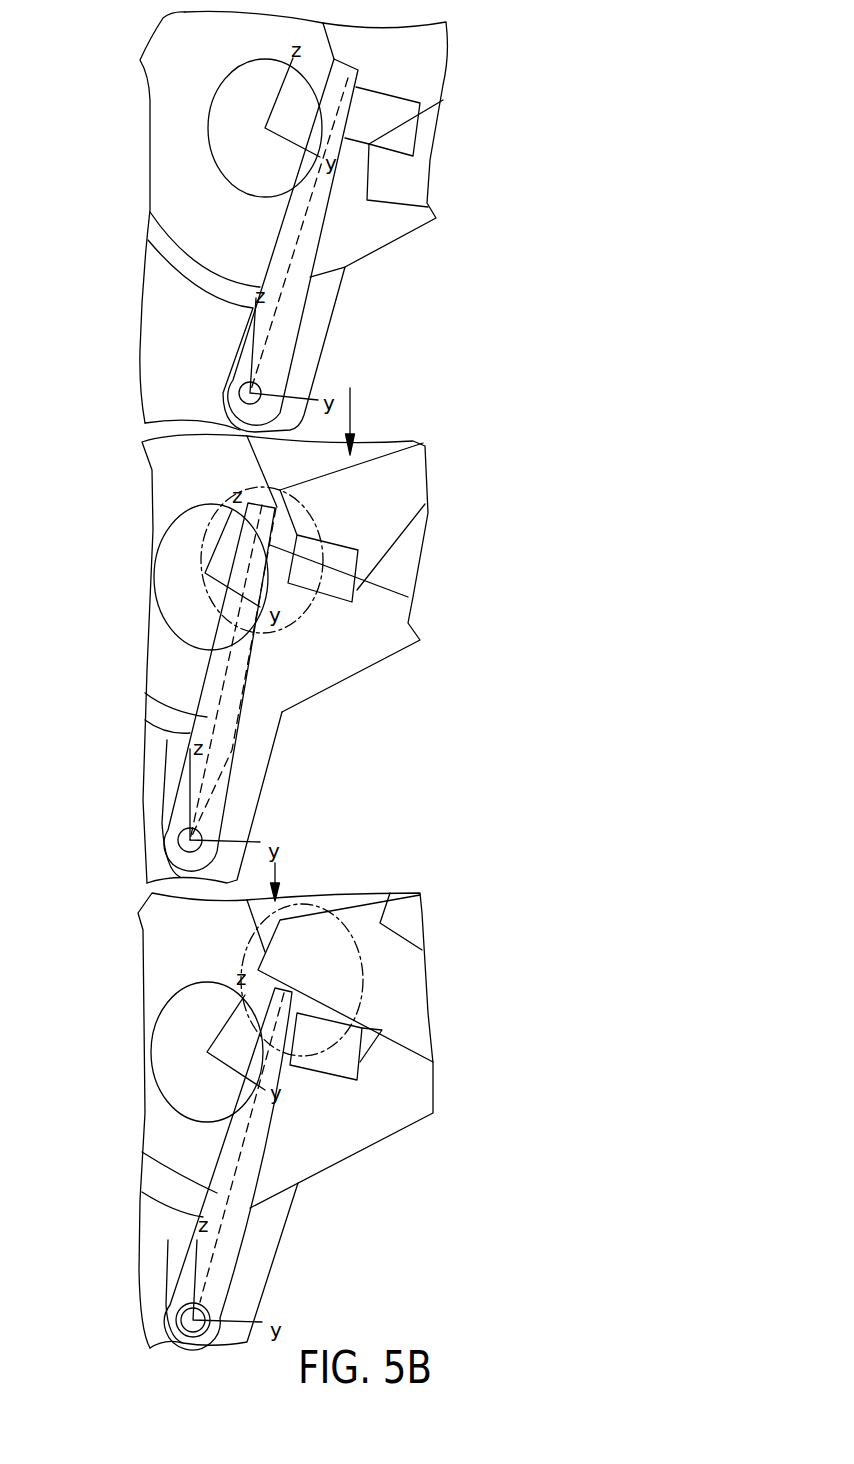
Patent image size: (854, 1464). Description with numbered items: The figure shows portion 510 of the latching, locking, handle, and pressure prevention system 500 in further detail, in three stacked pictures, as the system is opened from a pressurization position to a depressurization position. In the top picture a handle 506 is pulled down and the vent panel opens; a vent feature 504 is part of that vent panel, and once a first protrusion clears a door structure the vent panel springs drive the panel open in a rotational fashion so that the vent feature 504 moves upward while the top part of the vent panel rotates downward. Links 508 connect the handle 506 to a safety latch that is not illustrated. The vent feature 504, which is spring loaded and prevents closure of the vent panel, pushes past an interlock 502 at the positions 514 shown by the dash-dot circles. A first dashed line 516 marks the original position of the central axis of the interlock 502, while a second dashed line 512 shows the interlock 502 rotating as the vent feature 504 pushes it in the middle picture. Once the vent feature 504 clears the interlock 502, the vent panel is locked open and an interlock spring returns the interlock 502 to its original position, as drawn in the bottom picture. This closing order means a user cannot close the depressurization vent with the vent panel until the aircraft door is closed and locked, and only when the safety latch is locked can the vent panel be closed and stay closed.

The latching, locking, handle, and pressure prevention system 500 is at (98, 78).
The interlock 502 is at (150, 241).
The vent feature 504 is at (418, 178).
The handle 506 is at (430, 55).
The links 508 is at (155, 360).
The portion 510 is at (282, 323).
The second dashed line 512 is at (215, 770).
The positions 514 is at (200, 545).
The first dashed line 516 is at (220, 750).